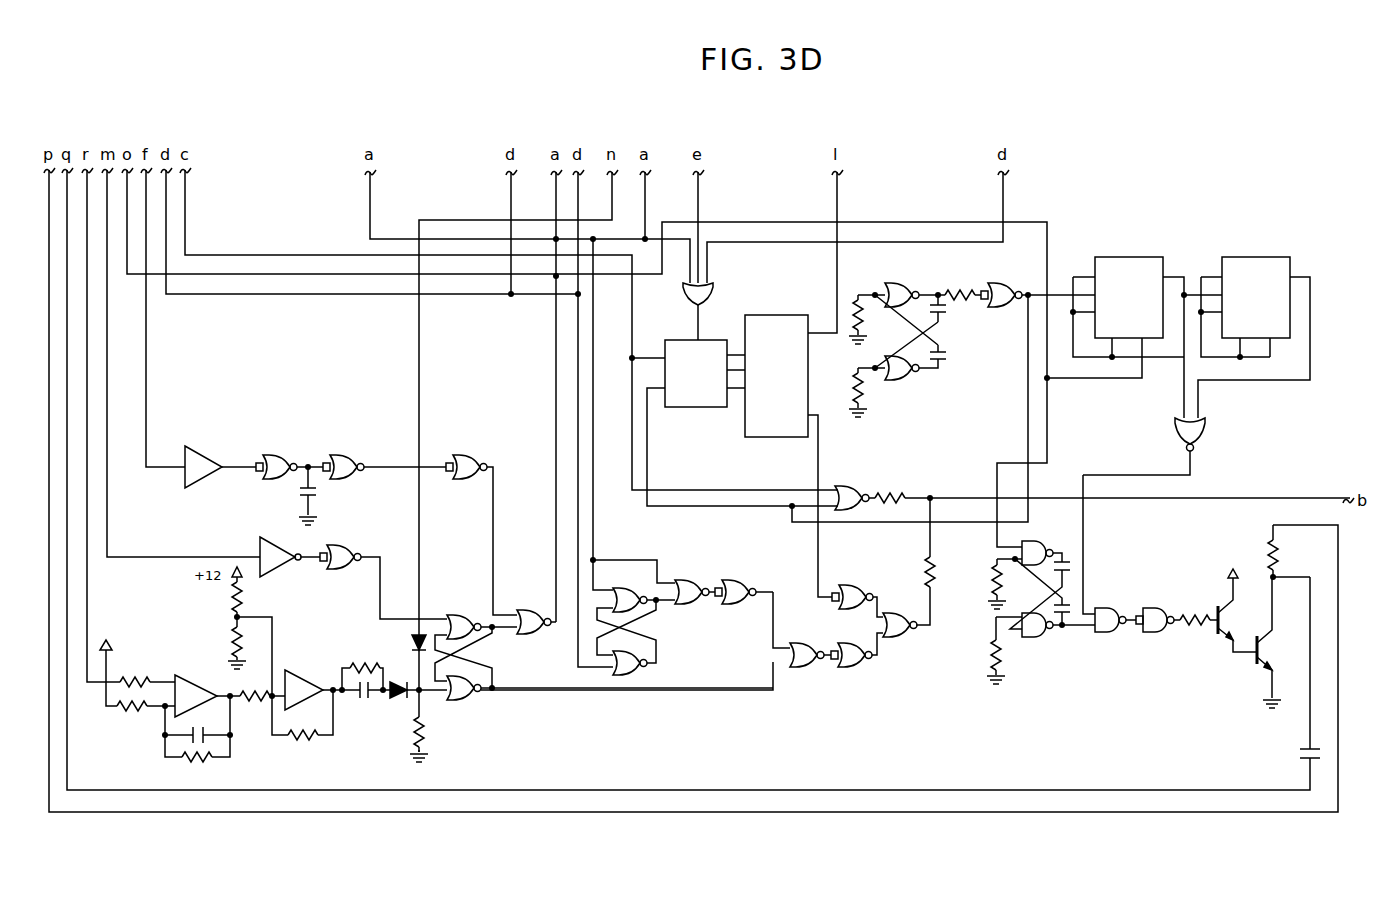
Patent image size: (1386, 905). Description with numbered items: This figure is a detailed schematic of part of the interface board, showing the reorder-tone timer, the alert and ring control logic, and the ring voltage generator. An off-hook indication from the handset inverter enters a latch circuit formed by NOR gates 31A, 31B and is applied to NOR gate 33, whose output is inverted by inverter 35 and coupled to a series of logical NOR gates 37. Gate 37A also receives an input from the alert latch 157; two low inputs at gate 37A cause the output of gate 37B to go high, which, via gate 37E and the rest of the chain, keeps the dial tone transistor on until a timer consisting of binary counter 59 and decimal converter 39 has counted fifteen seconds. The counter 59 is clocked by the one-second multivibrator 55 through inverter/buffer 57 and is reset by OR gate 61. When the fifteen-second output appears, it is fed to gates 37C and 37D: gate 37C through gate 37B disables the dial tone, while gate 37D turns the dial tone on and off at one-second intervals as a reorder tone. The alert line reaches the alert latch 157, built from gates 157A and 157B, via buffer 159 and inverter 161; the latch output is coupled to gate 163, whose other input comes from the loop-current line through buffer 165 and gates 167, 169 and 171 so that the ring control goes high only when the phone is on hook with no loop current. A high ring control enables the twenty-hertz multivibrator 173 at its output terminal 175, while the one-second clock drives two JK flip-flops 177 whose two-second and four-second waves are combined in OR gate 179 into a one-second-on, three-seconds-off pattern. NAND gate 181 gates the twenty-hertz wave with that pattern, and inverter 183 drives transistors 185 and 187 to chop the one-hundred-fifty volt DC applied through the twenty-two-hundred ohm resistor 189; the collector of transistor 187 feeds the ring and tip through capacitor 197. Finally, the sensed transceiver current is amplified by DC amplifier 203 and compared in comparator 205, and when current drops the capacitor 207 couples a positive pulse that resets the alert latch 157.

The OR gate 61 is at (713, 296).
The binary counter 59 is at (695, 408).
The decimal converter 39 is at (772, 437).
The multivibrator 55 is at (905, 380).
The inverter/buffer 57 is at (1003, 305).
The JK flip-flops 177 is at (1188, 258).
The OR gate 179 is at (1205, 432).
The NOR gate 37D is at (843, 490).
The series of logical NOR gates 37 is at (799, 605).
The NOR gate 37C is at (845, 585).
The NOR gate 37B is at (897, 640).
The NOR gate 37A is at (800, 673).
The NOR gate 37E is at (852, 672).
The NOR gate 33 is at (690, 583).
The inverter 35 is at (736, 607).
The NOR gate 31A is at (646, 609).
The NOR gate 31B is at (630, 673).
The buffer 165 is at (206, 447).
The NOR gate 167 is at (273, 455).
The NOR gate 169 is at (343, 455).
The NOR gate 171 is at (475, 451).
The capacitor 197 is at (318, 492).
The buffer 159 is at (260, 545).
The inverter 161 is at (346, 571).
The alert latch 157 is at (592, 648).
The NOR gate 157A is at (463, 698).
The NOR gate 157B is at (471, 637).
The NOR gate 163 is at (522, 606).
The DC amplifier 203 is at (197, 676).
The comparator 205 is at (306, 673).
The capacitor 207 is at (372, 706).
The 20 Hz multivibrator 173 is at (1038, 646).
The output terminal 175 is at (1079, 630).
The NAND gate 181 is at (1106, 608).
The inverter 183 is at (1158, 633).
The transistor 185 is at (1229, 604).
The transistor 187 is at (1250, 666).
The 2200 ohm resistor 189 is at (1267, 551).